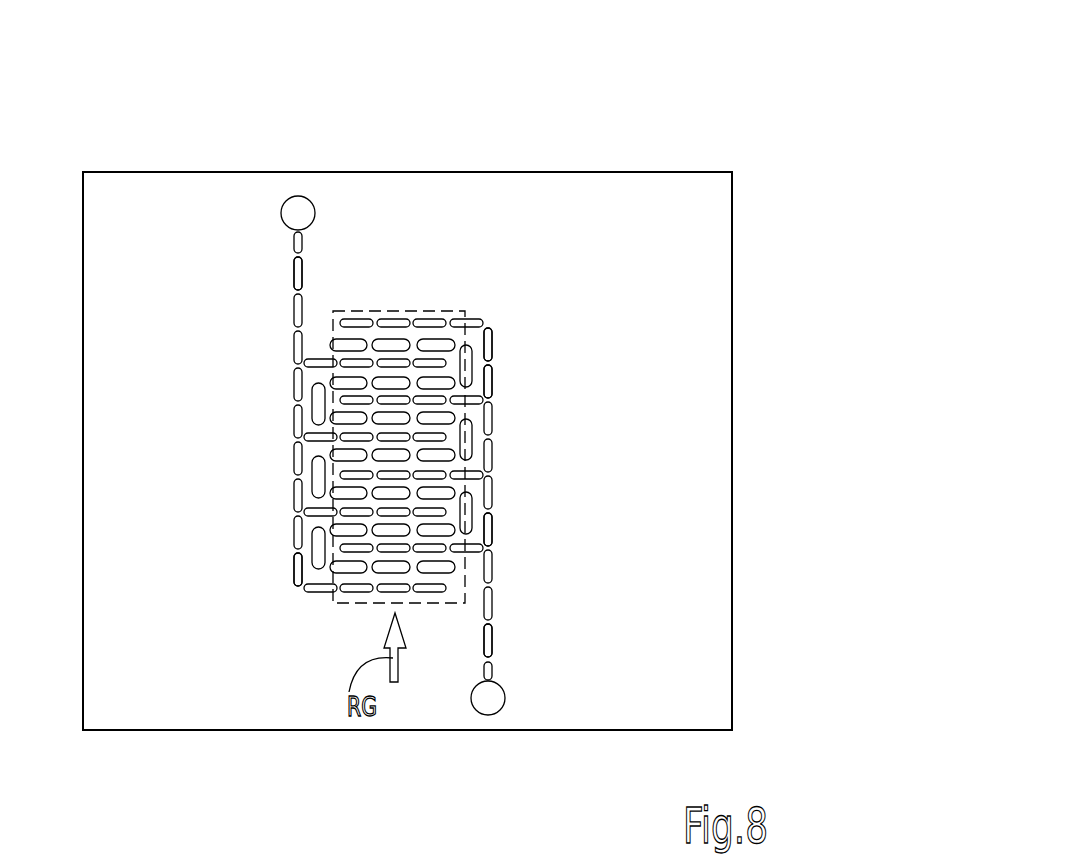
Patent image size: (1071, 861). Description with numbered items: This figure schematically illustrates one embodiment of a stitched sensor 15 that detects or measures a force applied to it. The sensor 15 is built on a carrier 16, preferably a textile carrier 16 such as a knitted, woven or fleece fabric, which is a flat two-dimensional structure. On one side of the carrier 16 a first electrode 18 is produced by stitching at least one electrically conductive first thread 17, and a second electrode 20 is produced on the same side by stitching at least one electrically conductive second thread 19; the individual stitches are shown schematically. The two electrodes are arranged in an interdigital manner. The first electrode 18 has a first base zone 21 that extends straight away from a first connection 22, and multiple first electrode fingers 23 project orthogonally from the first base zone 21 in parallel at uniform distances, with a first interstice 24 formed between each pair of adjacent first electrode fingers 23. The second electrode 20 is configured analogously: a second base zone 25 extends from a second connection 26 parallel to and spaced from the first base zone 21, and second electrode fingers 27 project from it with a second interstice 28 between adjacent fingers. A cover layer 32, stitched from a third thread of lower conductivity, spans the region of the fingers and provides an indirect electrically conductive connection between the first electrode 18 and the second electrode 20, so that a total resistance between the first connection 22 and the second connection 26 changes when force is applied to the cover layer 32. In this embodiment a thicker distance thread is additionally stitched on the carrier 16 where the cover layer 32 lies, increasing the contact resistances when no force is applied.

The sensor 15 is at (463, 368).
The carrier 16 is at (716, 437).
The first thread 17 is at (298, 303).
The first electrode 18 is at (277, 283).
The second thread 19 is at (490, 607).
The second electrode 20 is at (508, 648).
The first base zone 21 is at (300, 603).
The first connection 22 is at (296, 205).
The first electrode fingers 23 is at (322, 357).
The first interstice 24 is at (307, 376).
The second base zone 25 is at (496, 321).
The second connection 26 is at (494, 700).
The second electrode fingers 27 is at (478, 407).
The second interstice 28 is at (486, 362).
The cover layer 32 is at (430, 302).